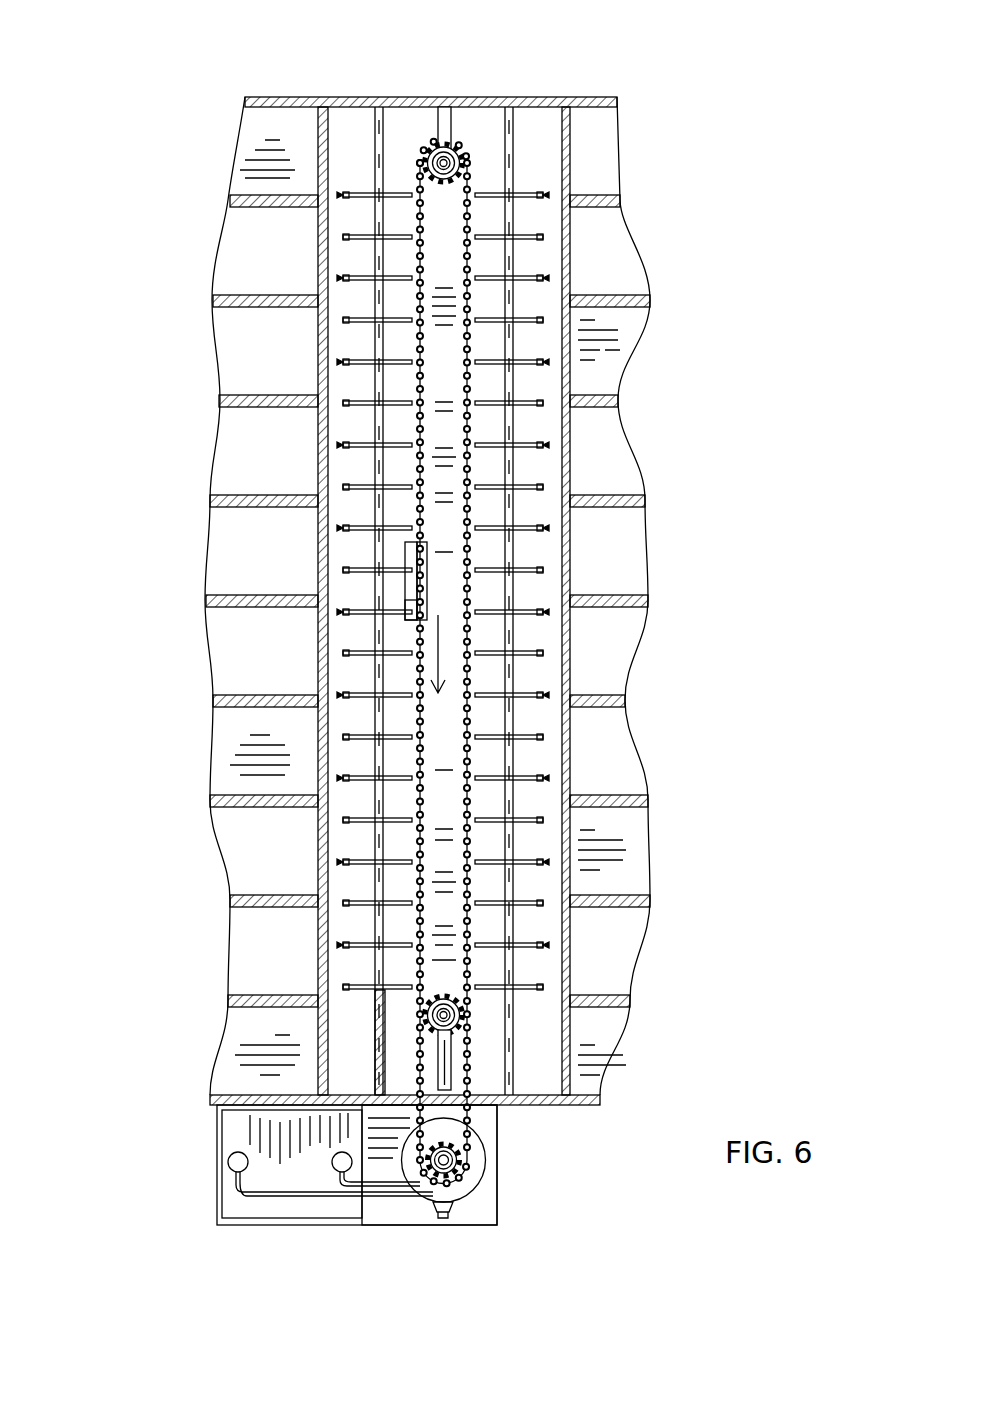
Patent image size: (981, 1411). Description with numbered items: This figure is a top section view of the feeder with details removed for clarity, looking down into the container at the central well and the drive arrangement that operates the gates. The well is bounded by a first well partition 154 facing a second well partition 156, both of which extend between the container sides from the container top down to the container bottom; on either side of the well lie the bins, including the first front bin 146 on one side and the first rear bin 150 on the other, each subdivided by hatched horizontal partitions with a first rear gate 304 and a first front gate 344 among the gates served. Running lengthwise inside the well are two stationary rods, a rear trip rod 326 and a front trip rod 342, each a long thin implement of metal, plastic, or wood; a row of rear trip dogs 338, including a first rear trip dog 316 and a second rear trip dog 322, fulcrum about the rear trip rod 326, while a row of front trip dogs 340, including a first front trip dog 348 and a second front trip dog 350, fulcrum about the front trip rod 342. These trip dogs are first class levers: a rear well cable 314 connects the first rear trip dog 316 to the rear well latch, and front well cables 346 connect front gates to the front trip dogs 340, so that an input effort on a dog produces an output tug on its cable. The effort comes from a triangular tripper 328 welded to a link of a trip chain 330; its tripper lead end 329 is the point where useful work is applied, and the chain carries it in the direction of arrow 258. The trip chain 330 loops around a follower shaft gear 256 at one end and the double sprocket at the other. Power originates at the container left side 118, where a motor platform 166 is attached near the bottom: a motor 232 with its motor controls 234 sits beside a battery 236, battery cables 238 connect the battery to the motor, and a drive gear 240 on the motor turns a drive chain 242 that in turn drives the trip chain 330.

The container left side 118 is at (215, 1100).
The first front bin 146 is at (612, 242).
The first rear bin 150 is at (243, 242).
The first well partition 154 is at (562, 135).
The second well partition 156 is at (328, 152).
The motor platform 166 is at (488, 1213).
The motor 232 is at (467, 1188).
The motor controls 234 is at (442, 1218).
The battery 236 is at (225, 1207).
The battery cables 238 is at (272, 1197).
The drive gear 240 is at (432, 1180).
The drive chain 242 is at (420, 1148).
The follower shaft gear 256 is at (427, 165).
The arrow 258 is at (438, 652).
The first rear gate 304 is at (220, 333).
The rear well cable 314 is at (345, 943).
The first rear trip dog 316 is at (347, 361).
The second rear trip dog 322 is at (353, 403).
The rear trip rod 326 is at (380, 120).
The tripper 328 is at (405, 548).
The tripper lead end 329 is at (408, 618).
The trip chain 330 is at (470, 702).
The rear trip dogs 338 is at (355, 193).
The front trip dogs 340 is at (527, 987).
The front trip rod 342 is at (505, 138).
The first front gate 344 is at (625, 330).
The front well cables 346 is at (548, 943).
The first front trip dog 348 is at (542, 403).
The second front trip dog 350 is at (545, 360).